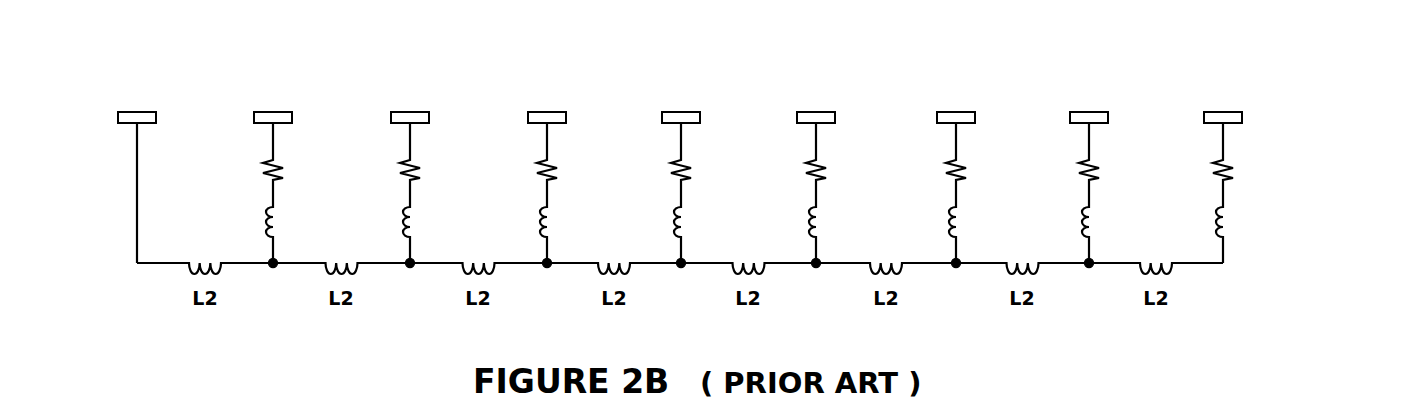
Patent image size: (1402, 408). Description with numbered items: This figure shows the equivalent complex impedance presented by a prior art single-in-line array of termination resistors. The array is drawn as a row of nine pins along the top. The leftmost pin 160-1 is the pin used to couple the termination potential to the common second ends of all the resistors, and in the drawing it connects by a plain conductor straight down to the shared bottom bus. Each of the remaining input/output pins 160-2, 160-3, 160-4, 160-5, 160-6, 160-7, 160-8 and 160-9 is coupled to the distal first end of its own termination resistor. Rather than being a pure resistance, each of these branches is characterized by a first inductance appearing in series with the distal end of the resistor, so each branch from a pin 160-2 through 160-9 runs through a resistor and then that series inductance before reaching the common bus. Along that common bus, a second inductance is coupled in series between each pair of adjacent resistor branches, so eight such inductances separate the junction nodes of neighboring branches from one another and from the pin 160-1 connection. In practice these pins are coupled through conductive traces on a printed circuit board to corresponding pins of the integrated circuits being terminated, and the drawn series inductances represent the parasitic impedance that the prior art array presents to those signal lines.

The pin 160-1 is at (147, 112).
The input/output pin 160-2 is at (283, 112).
The input/output pin 160-3 is at (420, 112).
The input/output pin 160-4 is at (557, 112).
The input/output pin 160-5 is at (691, 112).
The input/output pin 160-6 is at (826, 112).
The input/output pin 160-7 is at (966, 112).
The input/output pin 160-8 is at (1099, 112).
The input/output pin 160-9 is at (1233, 112).